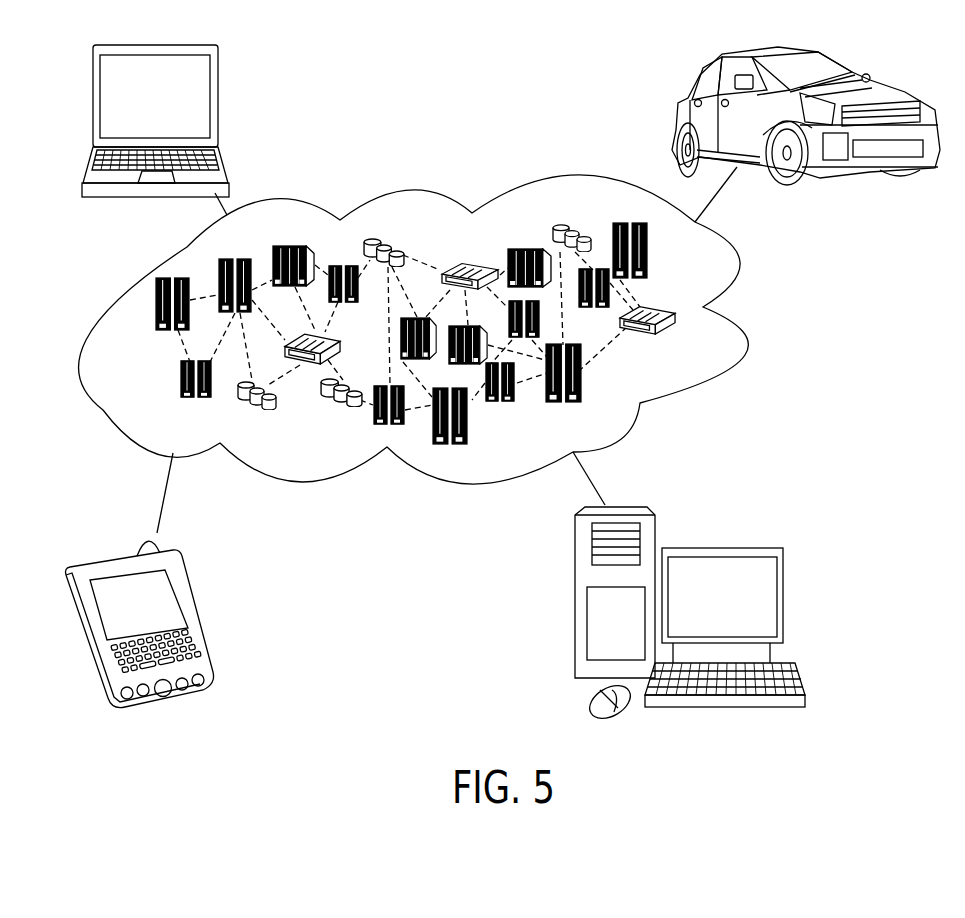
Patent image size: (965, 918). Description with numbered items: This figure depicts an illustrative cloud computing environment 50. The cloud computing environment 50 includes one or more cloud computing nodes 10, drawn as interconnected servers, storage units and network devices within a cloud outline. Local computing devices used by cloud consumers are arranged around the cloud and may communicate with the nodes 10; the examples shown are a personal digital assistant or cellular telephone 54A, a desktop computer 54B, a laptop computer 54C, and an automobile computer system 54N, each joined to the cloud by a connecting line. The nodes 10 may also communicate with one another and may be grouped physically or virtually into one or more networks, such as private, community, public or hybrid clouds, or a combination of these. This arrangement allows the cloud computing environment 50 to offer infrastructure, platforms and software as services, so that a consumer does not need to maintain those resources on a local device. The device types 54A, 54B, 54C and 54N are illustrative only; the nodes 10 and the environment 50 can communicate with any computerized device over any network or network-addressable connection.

The cloud computing nodes 10 is at (703, 361).
The cloud computing environment 50 is at (738, 262).
The personal digital assistant or cellular telephone 54A is at (187, 597).
The desktop computer 54B is at (783, 595).
The laptop computer 54C is at (216, 100).
The automobile computer system 54N is at (850, 72).